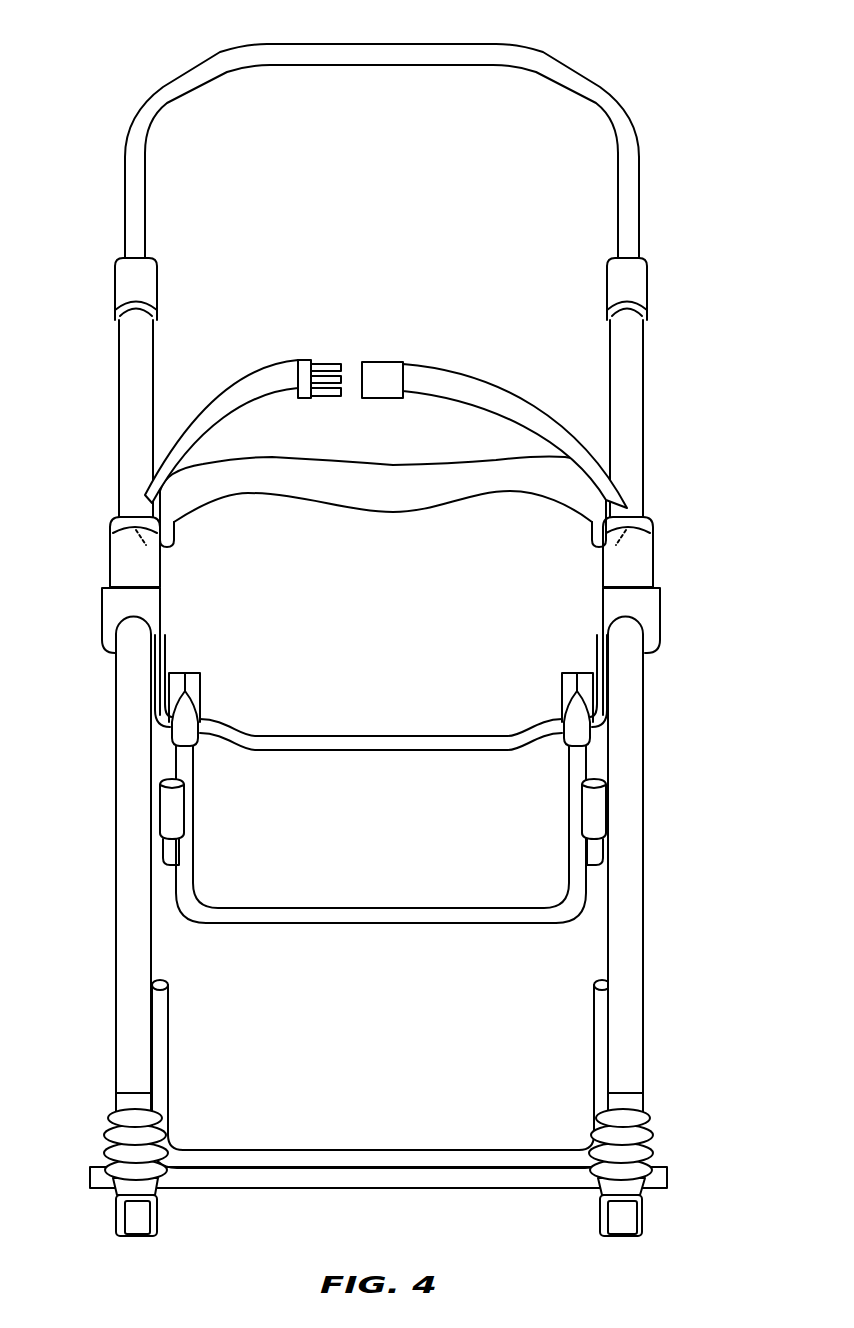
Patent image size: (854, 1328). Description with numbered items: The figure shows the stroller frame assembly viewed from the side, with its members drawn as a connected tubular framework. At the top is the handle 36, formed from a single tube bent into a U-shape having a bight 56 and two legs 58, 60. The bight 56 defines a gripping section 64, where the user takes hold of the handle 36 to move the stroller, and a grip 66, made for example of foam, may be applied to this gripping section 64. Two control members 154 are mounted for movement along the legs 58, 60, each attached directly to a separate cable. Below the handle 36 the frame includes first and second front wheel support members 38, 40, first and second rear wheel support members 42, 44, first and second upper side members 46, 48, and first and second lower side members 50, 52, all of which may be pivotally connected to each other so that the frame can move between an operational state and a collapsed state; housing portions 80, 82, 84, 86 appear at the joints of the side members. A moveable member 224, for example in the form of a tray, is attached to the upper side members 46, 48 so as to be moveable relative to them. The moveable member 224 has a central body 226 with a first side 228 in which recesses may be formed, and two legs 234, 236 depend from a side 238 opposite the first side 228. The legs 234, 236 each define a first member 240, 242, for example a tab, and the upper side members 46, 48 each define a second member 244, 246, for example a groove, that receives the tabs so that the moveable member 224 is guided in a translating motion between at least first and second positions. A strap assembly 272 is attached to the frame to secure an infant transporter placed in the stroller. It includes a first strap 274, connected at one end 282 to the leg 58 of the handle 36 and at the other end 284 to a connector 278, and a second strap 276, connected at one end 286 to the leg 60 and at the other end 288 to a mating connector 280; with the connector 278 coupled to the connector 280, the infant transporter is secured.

The handle 36 is at (385, 418).
The first front wheel support member 38 is at (122, 990).
The second front wheel support member 40 is at (635, 990).
The first rear wheel support member 42 is at (115, 1100).
The second rear wheel support member 44 is at (640, 1098).
The first upper side member 46 is at (111, 556).
The second upper side member 48 is at (654, 557).
The first lower side member 50 is at (163, 811).
The second lower side member 52 is at (606, 815).
The bight 56 is at (416, 129).
The leg 58 is at (125, 375).
The leg 60 is at (643, 357).
The gripping section 64 is at (618, 88).
The grip 66 is at (640, 151).
The left lower housing 80 is at (108, 660).
The right lower housing 82 is at (659, 662).
The left housing upper portion 84 is at (97, 619).
The right housing upper portion 86 is at (668, 614).
The control member 154 is at (116, 290).
The moveable member 224 is at (383, 517).
The central body 226 is at (382, 508).
The first side 228 is at (312, 458).
The leg 234 is at (176, 532).
The leg 236 is at (591, 532).
The side 238 is at (308, 530).
The first member 240 is at (167, 551).
The first member 242 is at (599, 553).
The second member 244 is at (126, 536).
The second member 246 is at (637, 538).
The strap assembly 272 is at (386, 387).
The first strap 274 is at (217, 408).
The second strap 276 is at (514, 403).
The connector 278 is at (309, 347).
The connector 280 is at (395, 362).
The end 282 is at (163, 429).
The end 284 is at (285, 357).
The end 286 is at (605, 431).
The end 288 is at (434, 360).